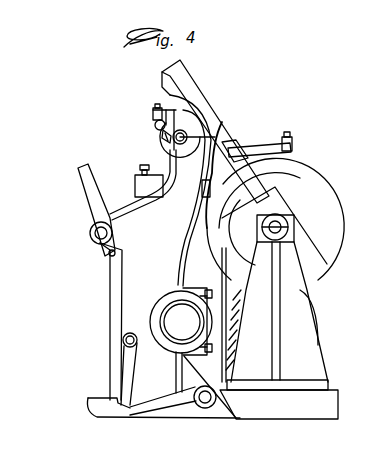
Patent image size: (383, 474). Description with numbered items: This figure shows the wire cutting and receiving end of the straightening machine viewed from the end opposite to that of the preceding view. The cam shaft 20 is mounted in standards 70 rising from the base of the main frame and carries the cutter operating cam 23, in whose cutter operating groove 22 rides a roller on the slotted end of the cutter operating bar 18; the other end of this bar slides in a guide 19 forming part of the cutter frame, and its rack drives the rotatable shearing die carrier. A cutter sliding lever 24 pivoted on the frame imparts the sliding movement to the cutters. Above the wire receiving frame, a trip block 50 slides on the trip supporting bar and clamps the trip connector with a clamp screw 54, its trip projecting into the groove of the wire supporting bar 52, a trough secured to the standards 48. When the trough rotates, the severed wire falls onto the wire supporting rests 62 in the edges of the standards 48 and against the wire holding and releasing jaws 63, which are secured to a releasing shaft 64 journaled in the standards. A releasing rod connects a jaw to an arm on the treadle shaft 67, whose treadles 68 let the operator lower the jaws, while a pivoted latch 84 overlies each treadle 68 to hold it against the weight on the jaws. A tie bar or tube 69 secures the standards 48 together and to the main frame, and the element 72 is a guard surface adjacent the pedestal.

The cutter operating bar 18 is at (238, 153).
The guide 19 is at (194, 91).
The cam shaft 20 is at (289, 223).
The cutter operating groove 22 is at (243, 273).
The cutter operating cam 23 is at (334, 256).
The cutter sliding lever 24 is at (258, 147).
The standards 48 is at (128, 286).
The trip block 50 is at (155, 126).
The wire supporting bar 52 is at (184, 190).
The clamp screw 54 is at (164, 139).
The wire supporting rests 62 is at (139, 209).
The wire holding and releasing jaws 63 is at (88, 198).
The releasing shaft 64 is at (91, 234).
The treadle shaft 67 is at (204, 409).
The treadle 68 is at (154, 414).
The tie bar or tube 69 is at (172, 312).
The standards 70 is at (310, 353).
The guard 72 is at (312, 315).
The latch 84 is at (135, 368).